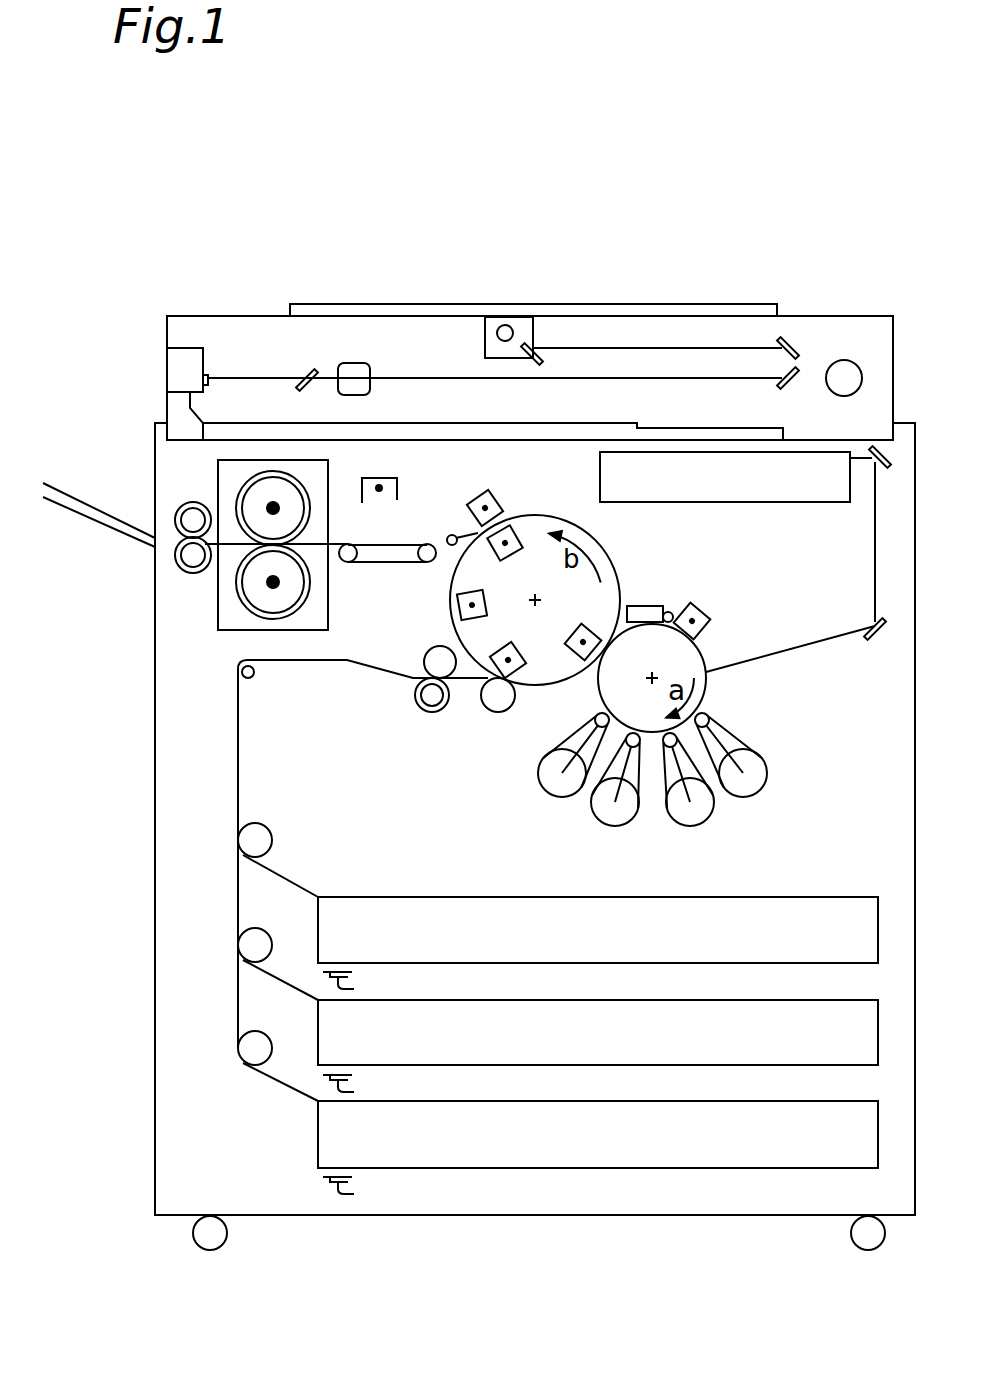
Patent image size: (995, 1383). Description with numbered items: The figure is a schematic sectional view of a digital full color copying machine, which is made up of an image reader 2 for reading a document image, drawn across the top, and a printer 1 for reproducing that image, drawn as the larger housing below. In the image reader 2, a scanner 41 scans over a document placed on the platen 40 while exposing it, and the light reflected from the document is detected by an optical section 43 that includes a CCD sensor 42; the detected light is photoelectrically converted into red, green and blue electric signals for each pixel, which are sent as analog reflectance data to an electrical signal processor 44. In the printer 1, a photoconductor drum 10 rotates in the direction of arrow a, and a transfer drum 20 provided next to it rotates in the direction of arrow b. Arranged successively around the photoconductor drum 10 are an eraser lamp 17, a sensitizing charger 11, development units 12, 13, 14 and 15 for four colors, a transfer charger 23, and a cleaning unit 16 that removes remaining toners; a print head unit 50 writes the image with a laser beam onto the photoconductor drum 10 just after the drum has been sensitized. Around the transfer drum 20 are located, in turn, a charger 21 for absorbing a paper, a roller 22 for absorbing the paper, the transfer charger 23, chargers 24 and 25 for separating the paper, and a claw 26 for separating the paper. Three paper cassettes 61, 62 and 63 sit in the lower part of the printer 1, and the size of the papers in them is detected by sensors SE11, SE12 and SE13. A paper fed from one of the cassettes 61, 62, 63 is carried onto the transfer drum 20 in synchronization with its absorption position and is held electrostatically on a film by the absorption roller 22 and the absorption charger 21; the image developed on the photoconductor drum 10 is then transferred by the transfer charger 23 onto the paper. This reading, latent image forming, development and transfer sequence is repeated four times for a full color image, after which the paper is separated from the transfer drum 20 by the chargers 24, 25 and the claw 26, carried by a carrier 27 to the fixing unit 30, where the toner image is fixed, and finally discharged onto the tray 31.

The printer 1 is at (868, 755).
The image reader 2 is at (828, 359).
The photoconductor drum 10 is at (706, 688).
The sensitizing charger 11 is at (704, 632).
The development unit 12 is at (745, 797).
The development unit 13 is at (698, 827).
The development unit 14 is at (615, 827).
The development unit 15 is at (543, 795).
The cleaning unit 16 is at (636, 606).
The eraser lamp 17 is at (672, 612).
The transfer drum 20 is at (540, 516).
The charger for absorbing a paper 21 is at (516, 648).
The roller for absorbing the paper 22 is at (495, 712).
The transfer charger 23 is at (577, 636).
The charger for separating the paper 24 is at (512, 552).
The charger for separating the paper 25 is at (480, 500).
The claw for separating the paper 26 is at (448, 538).
The carrier 27 is at (380, 565).
The fixing unit 30 is at (250, 632).
The tray 31 is at (125, 548).
The platen 40 is at (722, 305).
The scanner 41 is at (486, 347).
The CCD sensor 42 is at (210, 378).
The optical section 43 is at (167, 375).
The electrical signal processor 44 is at (430, 422).
The print head unit 50 is at (752, 496).
The paper cassette 61 is at (792, 897).
The paper cassette 62 is at (792, 1000).
The paper cassette 63 is at (793, 1101).
The sensor SE11 is at (378, 981).
The sensor SE12 is at (378, 1084).
The sensor SE13 is at (378, 1186).